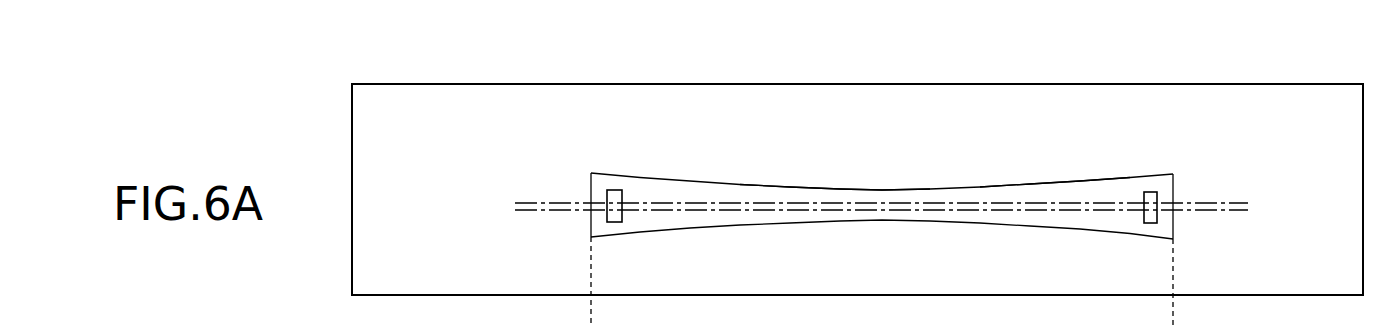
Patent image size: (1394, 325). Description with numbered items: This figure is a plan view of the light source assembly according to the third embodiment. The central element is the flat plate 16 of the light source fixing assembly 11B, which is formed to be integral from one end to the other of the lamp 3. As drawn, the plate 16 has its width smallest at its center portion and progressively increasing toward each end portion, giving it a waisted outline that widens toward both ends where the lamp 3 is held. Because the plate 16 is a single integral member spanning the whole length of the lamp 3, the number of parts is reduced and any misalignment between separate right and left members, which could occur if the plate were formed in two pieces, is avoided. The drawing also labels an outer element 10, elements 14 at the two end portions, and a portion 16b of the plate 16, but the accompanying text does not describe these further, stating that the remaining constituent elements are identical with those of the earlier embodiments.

The housing 10 is at (1000, 84).
The light source fixing assembly 11B is at (733, 165).
The light source 14 is at (607, 193).
The lamp 3 is at (944, 201).
The flat plate 16 is at (845, 190).
The curved surface portion 16b is at (1055, 193).